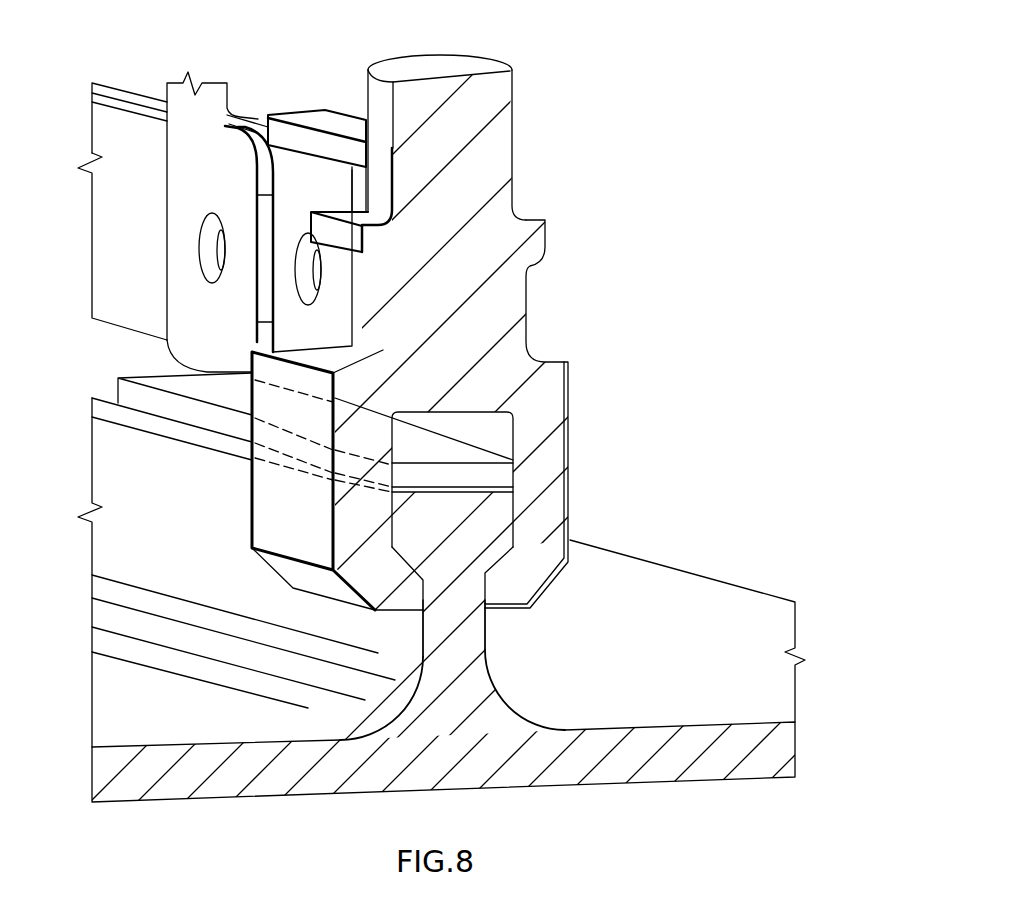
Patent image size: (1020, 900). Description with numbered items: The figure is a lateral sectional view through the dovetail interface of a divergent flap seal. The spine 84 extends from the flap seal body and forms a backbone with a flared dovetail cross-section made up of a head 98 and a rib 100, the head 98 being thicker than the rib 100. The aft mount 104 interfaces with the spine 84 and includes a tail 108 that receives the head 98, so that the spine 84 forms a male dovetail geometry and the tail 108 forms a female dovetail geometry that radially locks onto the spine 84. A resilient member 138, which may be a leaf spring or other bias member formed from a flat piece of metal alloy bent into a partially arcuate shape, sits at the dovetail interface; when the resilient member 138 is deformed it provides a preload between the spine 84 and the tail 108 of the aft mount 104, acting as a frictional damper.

The spine 84 is at (372, 672).
The head 98 is at (491, 522).
The rib 100 is at (467, 643).
The aft mount 104 is at (490, 73).
The tail 108 is at (585, 407).
The resilient member 138 is at (420, 447).